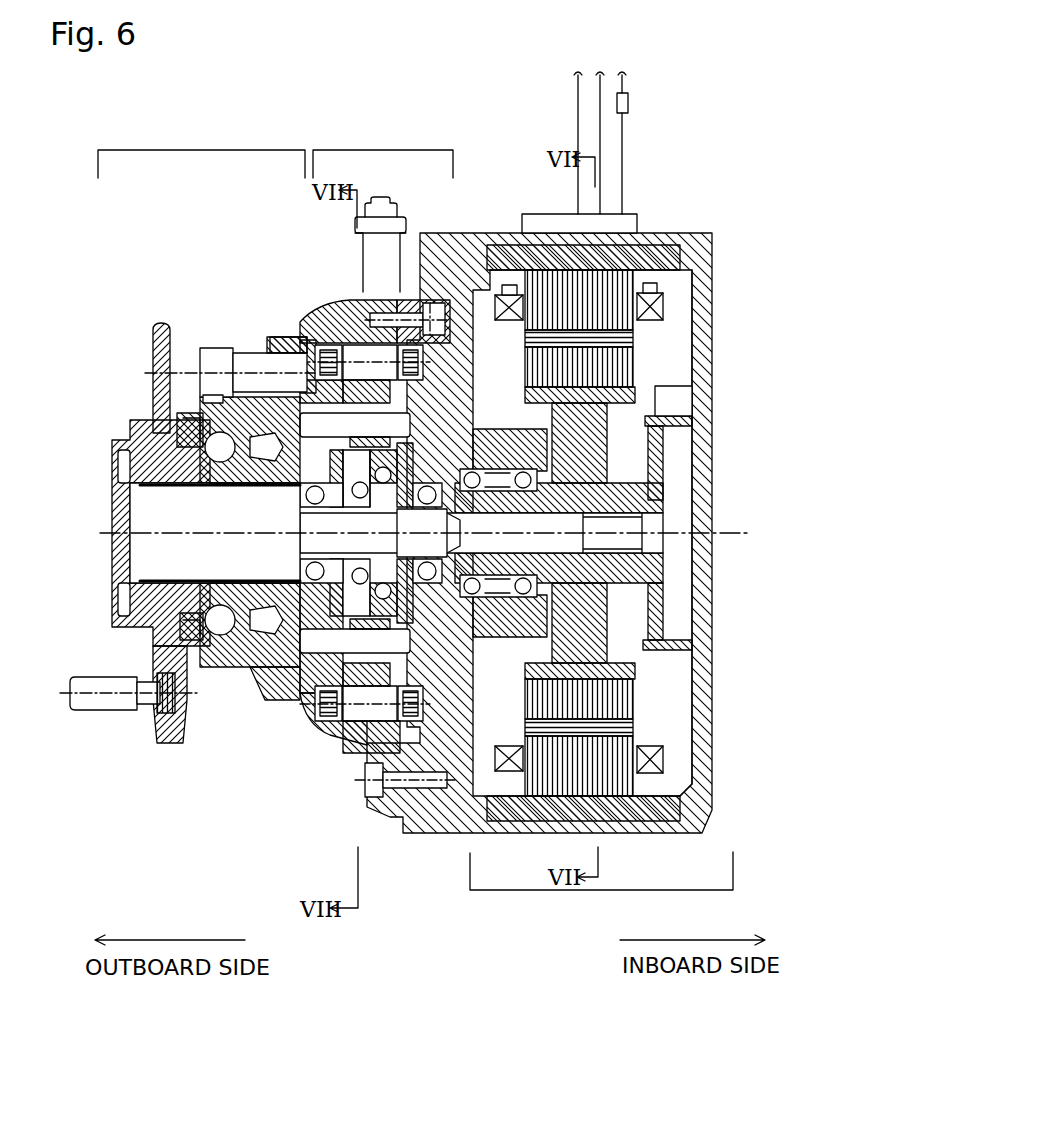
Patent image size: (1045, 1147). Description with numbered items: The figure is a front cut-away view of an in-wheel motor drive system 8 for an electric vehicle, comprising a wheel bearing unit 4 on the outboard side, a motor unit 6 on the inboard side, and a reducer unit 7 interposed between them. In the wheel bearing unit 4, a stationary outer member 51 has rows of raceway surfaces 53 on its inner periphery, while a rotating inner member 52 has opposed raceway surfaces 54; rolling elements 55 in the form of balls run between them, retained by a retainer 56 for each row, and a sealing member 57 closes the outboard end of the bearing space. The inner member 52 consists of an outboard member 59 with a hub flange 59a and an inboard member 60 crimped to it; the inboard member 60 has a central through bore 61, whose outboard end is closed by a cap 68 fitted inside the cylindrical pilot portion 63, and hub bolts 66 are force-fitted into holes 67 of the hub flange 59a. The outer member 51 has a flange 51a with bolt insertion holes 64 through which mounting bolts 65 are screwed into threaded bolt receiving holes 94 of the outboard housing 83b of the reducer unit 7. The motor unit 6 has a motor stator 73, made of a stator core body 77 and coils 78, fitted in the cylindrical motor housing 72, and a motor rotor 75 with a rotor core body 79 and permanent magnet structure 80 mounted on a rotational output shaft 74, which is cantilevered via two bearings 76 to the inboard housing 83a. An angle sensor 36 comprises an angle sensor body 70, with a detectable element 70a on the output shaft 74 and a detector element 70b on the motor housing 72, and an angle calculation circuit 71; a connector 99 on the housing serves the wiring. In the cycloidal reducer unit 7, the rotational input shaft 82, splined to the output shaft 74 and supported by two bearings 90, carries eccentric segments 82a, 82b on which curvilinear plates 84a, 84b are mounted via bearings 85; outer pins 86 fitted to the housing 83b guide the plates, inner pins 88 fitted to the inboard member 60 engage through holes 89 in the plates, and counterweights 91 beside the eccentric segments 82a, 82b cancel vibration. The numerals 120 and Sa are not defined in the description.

The wheel bearing unit 4 is at (201, 148).
The motor unit 6 is at (601, 887).
The reducer unit 7 is at (383, 147).
The in-wheel motor drive system 8 is at (477, 84).
The angle sensor 36 is at (812, 320).
The outer member 51 is at (197, 410).
The flange 51a is at (223, 347).
The inner member 52 is at (161, 533).
The raceway surfaces 53 is at (240, 640).
The raceway surfaces 54 is at (222, 605).
The rolling elements 55 is at (223, 457).
The retainer 56 is at (220, 637).
The sealing member 57 is at (183, 617).
The outboard member 59 is at (160, 453).
The hub flange 59a is at (160, 323).
The inboard member 60 is at (160, 490).
The through bore 61 is at (170, 552).
The pilot portion 63 is at (110, 437).
The bolt insertion holes 64 is at (207, 405).
The mounting bolts 65 is at (203, 347).
The hub bolts 66 is at (103, 702).
The force-fitting holes 67 is at (157, 707).
The cap 68 is at (130, 570).
The angle sensor body 70 is at (667, 510).
The detectable element 70a is at (663, 463).
The detector element 70b is at (660, 413).
The angle calculation circuit 71 is at (628, 107).
The motor housing 72 is at (505, 232).
The motor stator 73 is at (603, 473).
The rotational output shaft 74 is at (663, 577).
The motor rotor 75 is at (520, 402).
The bearings 76 is at (500, 598).
The stator core body 77 is at (657, 232).
The coils 78 is at (683, 232).
The rotor core body 79 is at (540, 360).
The permanent magnet structure 80 is at (535, 340).
The rotational input shaft 82 is at (567, 543).
The eccentric segment 82a is at (380, 520).
The eccentric segment 82b is at (375, 553).
The inboard housing 83a is at (464, 330).
The outboard housing 83b is at (332, 425).
The curvilinear plate 84a is at (385, 680).
The curvilinear plate 84b is at (375, 690).
The bearings 85 is at (317, 583).
The outer pins 86 is at (370, 353).
The inner pins 88 is at (305, 350).
The through holes 89 is at (357, 453).
The bearings 90 is at (305, 612).
The counterweights 91 is at (313, 487).
The bolt receiving holes 94 is at (262, 347).
The connector 99 is at (553, 218).
The knuckle arm 120 is at (180, 347).
The sealing surface Sa is at (494, 233).